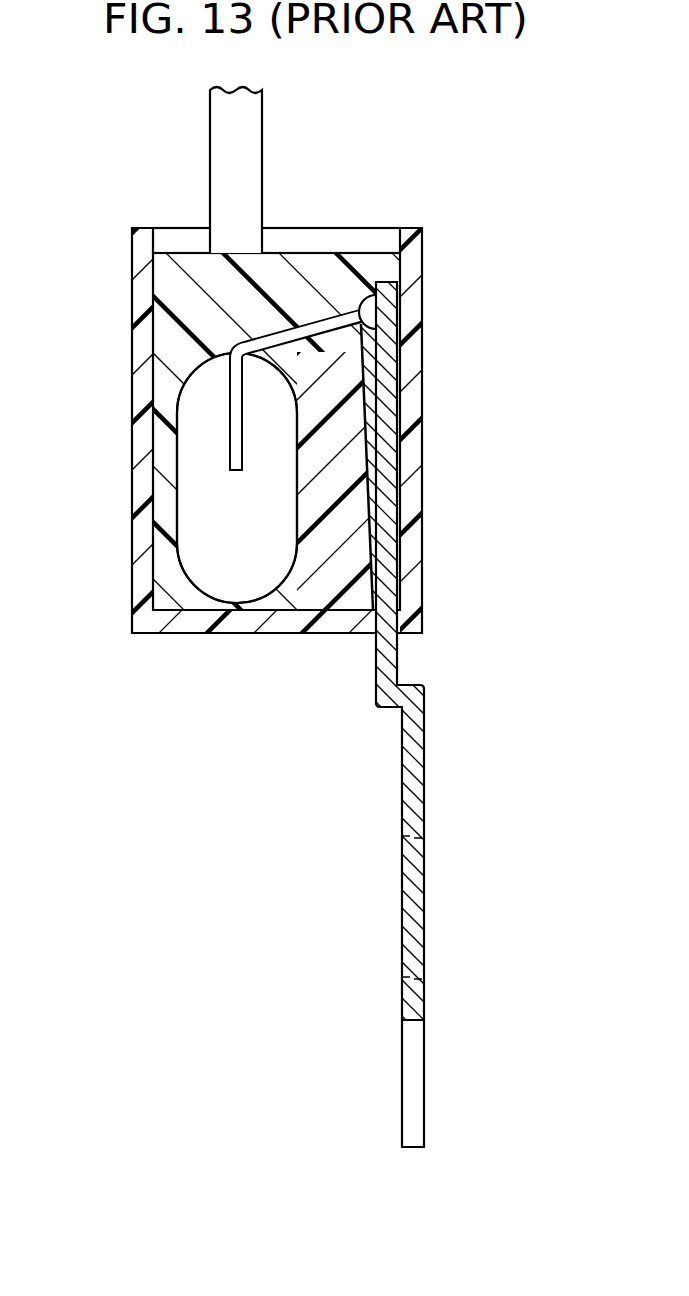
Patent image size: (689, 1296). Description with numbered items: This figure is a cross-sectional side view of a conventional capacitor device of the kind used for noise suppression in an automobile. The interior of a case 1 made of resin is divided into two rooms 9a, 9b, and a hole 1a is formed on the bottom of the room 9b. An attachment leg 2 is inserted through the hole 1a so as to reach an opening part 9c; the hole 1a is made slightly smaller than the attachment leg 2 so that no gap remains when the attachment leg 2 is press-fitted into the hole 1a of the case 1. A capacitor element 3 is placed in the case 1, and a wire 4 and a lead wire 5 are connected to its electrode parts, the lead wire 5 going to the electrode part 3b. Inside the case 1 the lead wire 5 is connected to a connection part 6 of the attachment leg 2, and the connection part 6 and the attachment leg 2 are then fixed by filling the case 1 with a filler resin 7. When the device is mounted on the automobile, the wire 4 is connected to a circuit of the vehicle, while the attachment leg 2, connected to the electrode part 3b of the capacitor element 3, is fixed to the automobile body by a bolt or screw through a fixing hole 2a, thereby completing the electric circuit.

The case 1 is at (413, 347).
The hole 1a is at (377, 631).
The attachment leg 2 is at (424, 770).
The fixing hole 2a is at (402, 912).
The capacitor element 3 is at (222, 575).
The electrode part 3b is at (217, 490).
The wire 4 is at (253, 130).
The lead wire 5 is at (312, 318).
The connection part 6 is at (360, 298).
The filler resin 7 is at (190, 288).
The room 9a is at (185, 352).
The room 9b is at (367, 377).
The opening part 9c is at (286, 234).